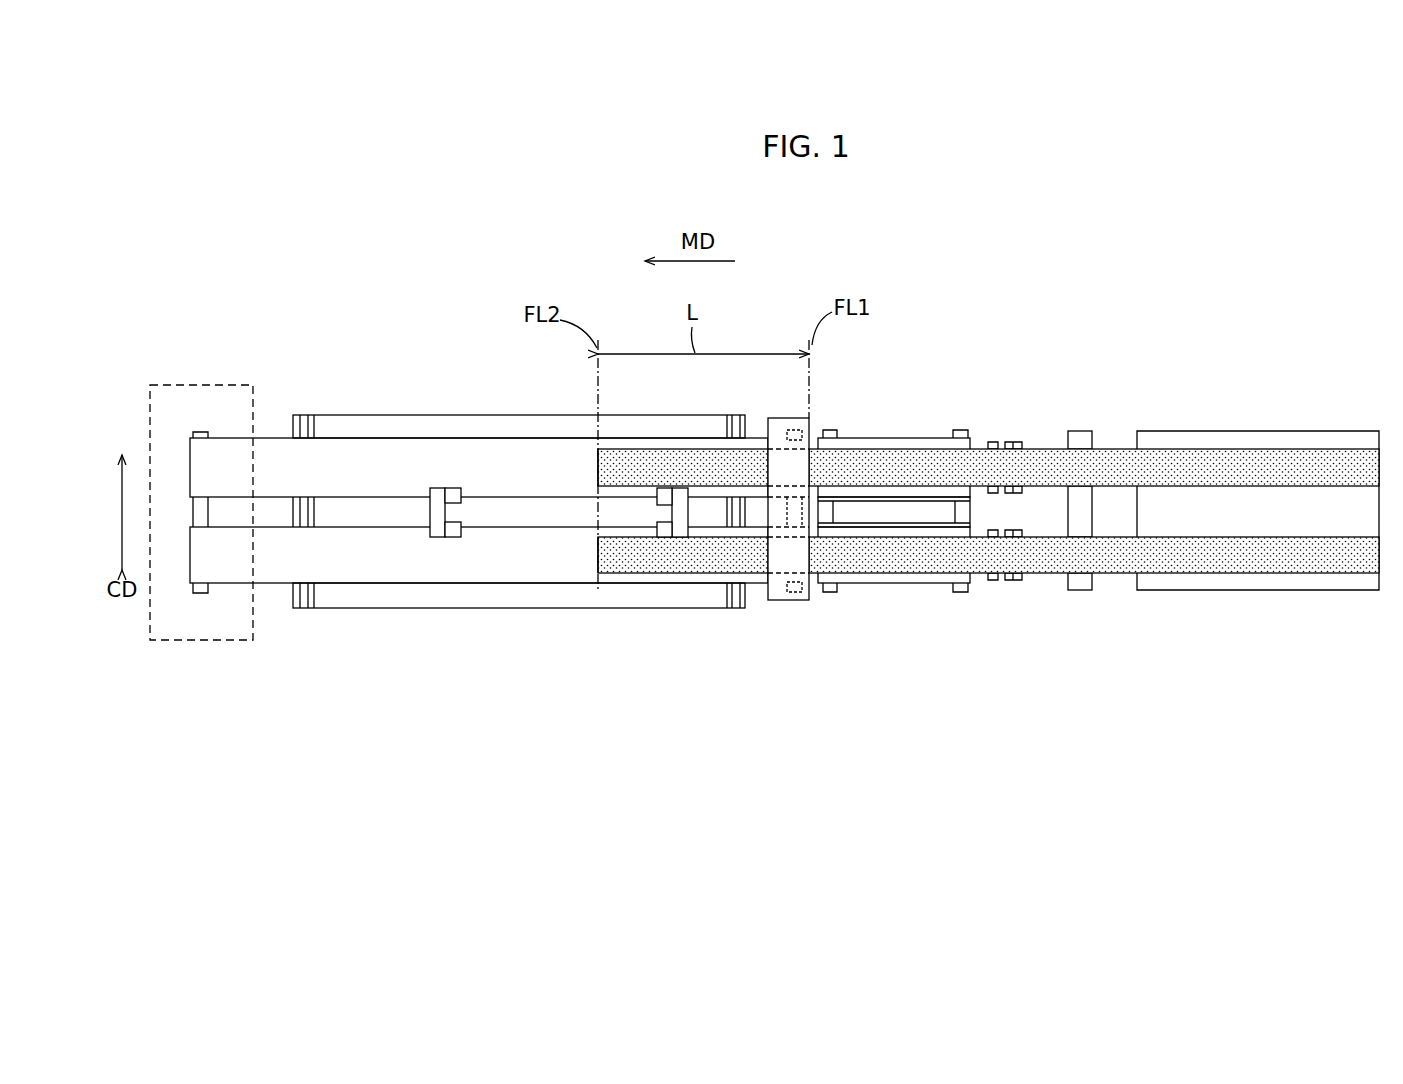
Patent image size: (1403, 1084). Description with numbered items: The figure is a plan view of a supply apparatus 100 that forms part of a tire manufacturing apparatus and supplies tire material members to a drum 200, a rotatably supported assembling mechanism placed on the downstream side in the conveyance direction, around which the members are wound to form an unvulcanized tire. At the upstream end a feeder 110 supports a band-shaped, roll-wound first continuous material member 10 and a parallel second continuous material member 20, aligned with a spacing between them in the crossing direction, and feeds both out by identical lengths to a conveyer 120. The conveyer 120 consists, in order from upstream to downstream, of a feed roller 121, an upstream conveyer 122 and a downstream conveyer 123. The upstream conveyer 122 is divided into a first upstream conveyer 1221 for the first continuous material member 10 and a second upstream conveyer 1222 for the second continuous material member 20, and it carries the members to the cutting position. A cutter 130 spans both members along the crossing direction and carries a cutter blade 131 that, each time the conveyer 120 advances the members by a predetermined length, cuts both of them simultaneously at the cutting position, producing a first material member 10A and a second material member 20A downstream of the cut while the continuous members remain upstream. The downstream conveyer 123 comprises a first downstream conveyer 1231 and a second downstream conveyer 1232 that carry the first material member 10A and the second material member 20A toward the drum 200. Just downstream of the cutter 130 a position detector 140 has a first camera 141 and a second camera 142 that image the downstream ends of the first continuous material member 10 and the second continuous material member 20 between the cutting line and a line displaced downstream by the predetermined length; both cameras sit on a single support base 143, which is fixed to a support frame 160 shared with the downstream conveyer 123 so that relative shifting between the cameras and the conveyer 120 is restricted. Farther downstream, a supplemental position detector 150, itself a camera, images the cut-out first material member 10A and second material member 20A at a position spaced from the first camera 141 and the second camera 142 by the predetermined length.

The first continuous material member 10 is at (1120, 448).
The first material member 10A is at (598, 450).
The second continuous material member 20 is at (1188, 573).
The second material member 20A is at (598, 562).
The supply apparatus 100 is at (995, 302).
The feeder 110 is at (1275, 431).
The conveyer 120 is at (1012, 388).
The feed roller 121 is at (1078, 590).
The upstream conveyer 122 is at (908, 527).
The first upstream conveyer 1221 is at (917, 437).
The second upstream conveyer 1222 is at (862, 592).
The downstream conveyer 123 is at (479, 513).
The first downstream conveyer 1231 is at (272, 437).
The second downstream conveyer 1232 is at (275, 585).
The cutter 130 is at (796, 568).
The cutter blade 131 is at (793, 600).
The position detector 140 is at (673, 533).
The first camera 141 is at (660, 490).
The second camera 142 is at (667, 537).
The support base 143 is at (688, 512).
The supplemental position detector 150 is at (462, 505).
The support frame 160 is at (447, 415).
The drum 200 is at (196, 642).